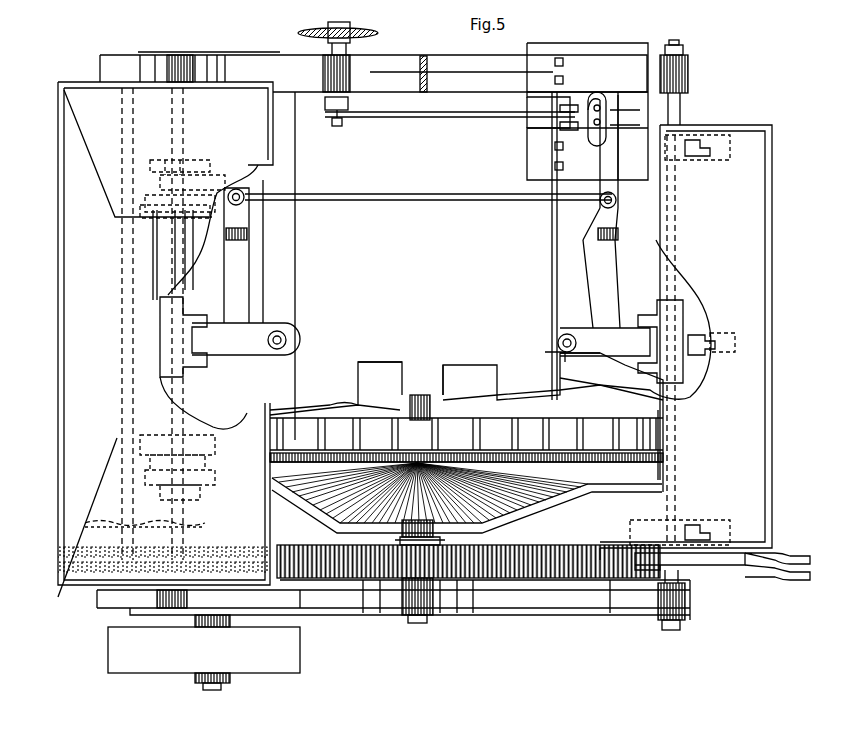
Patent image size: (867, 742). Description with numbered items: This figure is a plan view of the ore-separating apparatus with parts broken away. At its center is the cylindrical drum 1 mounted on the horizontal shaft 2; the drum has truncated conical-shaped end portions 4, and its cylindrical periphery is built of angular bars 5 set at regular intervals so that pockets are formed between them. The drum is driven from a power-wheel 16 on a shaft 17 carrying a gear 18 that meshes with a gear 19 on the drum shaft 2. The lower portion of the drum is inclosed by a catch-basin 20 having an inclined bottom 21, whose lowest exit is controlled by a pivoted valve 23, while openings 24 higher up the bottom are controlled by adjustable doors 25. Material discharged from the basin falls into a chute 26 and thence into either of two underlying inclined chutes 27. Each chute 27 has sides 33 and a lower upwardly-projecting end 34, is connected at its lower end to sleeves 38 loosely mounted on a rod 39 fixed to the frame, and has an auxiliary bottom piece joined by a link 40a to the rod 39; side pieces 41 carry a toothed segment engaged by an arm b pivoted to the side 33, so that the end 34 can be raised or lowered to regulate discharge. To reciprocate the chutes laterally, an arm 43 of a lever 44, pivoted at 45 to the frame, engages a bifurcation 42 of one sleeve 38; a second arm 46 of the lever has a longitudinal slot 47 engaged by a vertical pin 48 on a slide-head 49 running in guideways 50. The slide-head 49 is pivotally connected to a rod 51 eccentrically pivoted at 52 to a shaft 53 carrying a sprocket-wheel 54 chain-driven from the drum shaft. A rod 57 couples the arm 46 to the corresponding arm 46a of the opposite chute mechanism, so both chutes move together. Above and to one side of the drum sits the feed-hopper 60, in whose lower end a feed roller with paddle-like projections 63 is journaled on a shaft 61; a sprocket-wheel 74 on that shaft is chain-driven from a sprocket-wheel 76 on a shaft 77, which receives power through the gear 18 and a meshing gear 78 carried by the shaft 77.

The cylindrical drum 1 is at (466, 422).
The horizontal shaft 2 is at (420, 394).
The truncated conical-shaped end portions 4 is at (575, 492).
The angular bars 5 is at (567, 430).
The power-wheel 16 is at (204, 650).
The shaft 17 is at (207, 686).
The gear 18 is at (220, 438).
The gear 19 is at (512, 580).
The catch-basin 20 is at (548, 524).
The inclined bottom 21 is at (516, 408).
The valve 23 is at (428, 392).
The openings 24 is at (572, 416).
The adjustable doors or valves 25 is at (548, 415).
The chute 26 is at (380, 373).
The inclined chutes 27 is at (564, 371).
The sides 33 is at (628, 550).
The lower upwardly-projecting end 34 is at (773, 487).
The sleeves 38 is at (200, 358).
The shaft or rod 39 is at (200, 400).
The link 40a is at (700, 150).
The side pieces 41 is at (688, 565).
The bifurcation 42 is at (194, 312).
The arm 43 is at (650, 336).
The lever 44 is at (590, 348).
The pivot 45 is at (555, 341).
The arm 46 is at (614, 165).
The corresponding arm 46a is at (250, 215).
The longitudinal slot 47 is at (597, 108).
The vertical pin 48 is at (601, 110).
The slide-head 49 is at (620, 118).
The guideways 50 is at (527, 100).
The rod 51 is at (404, 120).
The eccentric pivot 52 is at (339, 128).
The shaft 53 is at (345, 20).
The sprocket-wheel 54 is at (380, 36).
The rod 57 is at (405, 202).
The feed-hopper 60 is at (165, 333).
The shaft 61 is at (183, 128).
The paddle-like projections 63 is at (200, 247).
The sprocket-wheel 74 is at (192, 526).
The sprocket-wheel 76 is at (95, 524).
The shaft 77 is at (117, 480).
The gear 78 is at (100, 490).
The arm b is at (786, 580).